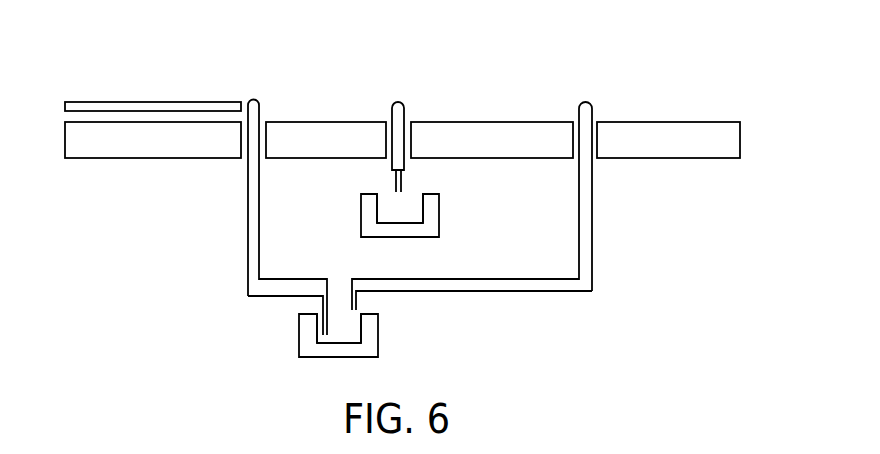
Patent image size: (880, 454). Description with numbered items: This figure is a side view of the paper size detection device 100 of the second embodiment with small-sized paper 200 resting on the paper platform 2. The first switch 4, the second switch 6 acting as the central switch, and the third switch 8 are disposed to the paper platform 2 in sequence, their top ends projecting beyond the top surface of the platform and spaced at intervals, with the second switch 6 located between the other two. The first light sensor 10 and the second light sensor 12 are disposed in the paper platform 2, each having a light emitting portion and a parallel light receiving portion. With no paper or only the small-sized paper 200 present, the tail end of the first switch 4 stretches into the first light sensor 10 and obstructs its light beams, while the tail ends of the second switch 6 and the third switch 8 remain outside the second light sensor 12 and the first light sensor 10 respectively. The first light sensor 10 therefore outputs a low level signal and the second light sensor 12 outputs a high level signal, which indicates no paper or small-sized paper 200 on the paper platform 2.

The paper size detection device 100 is at (167, 273).
The small-sized paper 200 is at (79, 100).
The paper platform 2 is at (701, 121).
The first switch 4 is at (248, 203).
The second switch 6 is at (393, 101).
The third switch 8 is at (582, 102).
The first light sensor 10 is at (337, 350).
The second light sensor 12 is at (410, 233).